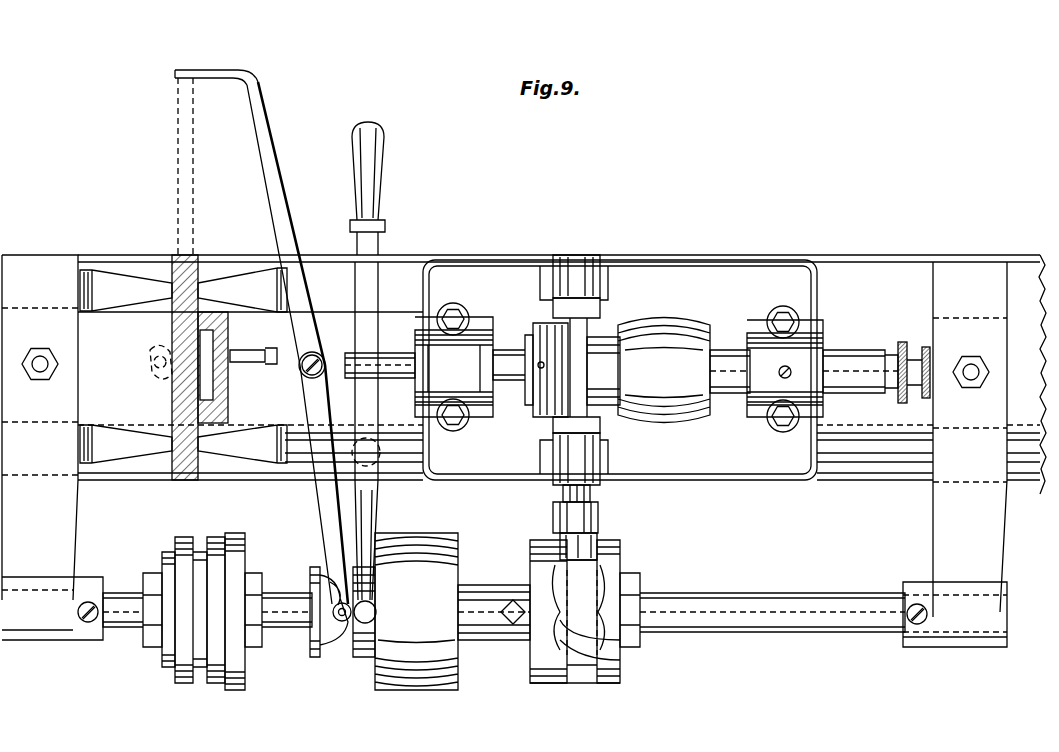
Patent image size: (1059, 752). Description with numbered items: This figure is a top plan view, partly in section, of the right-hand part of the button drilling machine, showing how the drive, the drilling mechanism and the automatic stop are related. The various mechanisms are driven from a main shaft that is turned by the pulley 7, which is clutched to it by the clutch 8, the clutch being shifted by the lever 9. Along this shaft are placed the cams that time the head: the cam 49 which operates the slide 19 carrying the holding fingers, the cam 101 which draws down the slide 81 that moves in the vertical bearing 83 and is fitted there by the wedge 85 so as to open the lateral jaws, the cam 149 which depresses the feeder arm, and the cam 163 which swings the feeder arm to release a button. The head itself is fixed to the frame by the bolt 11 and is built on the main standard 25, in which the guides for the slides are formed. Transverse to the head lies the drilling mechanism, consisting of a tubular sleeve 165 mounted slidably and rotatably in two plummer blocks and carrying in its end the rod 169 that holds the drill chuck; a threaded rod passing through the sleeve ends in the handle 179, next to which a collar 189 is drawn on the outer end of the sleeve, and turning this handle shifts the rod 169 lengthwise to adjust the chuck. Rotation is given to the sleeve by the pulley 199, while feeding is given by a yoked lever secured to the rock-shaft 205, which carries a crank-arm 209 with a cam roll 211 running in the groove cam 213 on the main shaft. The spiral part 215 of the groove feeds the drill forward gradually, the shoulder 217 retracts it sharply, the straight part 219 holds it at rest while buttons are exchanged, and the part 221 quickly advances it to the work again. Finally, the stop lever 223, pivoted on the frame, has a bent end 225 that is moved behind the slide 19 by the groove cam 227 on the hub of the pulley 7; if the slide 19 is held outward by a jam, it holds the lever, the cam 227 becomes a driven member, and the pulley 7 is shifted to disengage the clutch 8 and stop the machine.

The pulley 7 is at (423, 690).
The clutch 8 is at (480, 642).
The lever 9 is at (380, 165).
The bolt 11 is at (150, 360).
The slide member 19 is at (178, 129).
The main standard 25 is at (182, 402).
The cam 49 is at (216, 684).
The slide 81 is at (214, 345).
The vertical bearing 83 is at (226, 376).
The wedge 85 is at (210, 400).
The cam 101 is at (236, 688).
The cam 149 is at (183, 682).
The cam 163 is at (168, 666).
The tubular shaft or sleeve 165 is at (728, 360).
The rod 169 is at (362, 362).
The head or handle 179 is at (907, 352).
The collar 189 is at (908, 396).
The pulley 199 is at (665, 332).
The rock-shaft 205 is at (592, 493).
The crank-arm 209 is at (566, 516).
The cam roll 211 is at (598, 546).
The groove cam 213 is at (622, 680).
The spiral part of cam groove 215 is at (597, 684).
The shoulder 217 is at (622, 640).
The straight part of cam groove 219 is at (602, 582).
The part of cam groove 221 is at (507, 606).
The lever 223 is at (272, 150).
The bent end 225 is at (215, 70).
The groove cam 227 is at (340, 660).